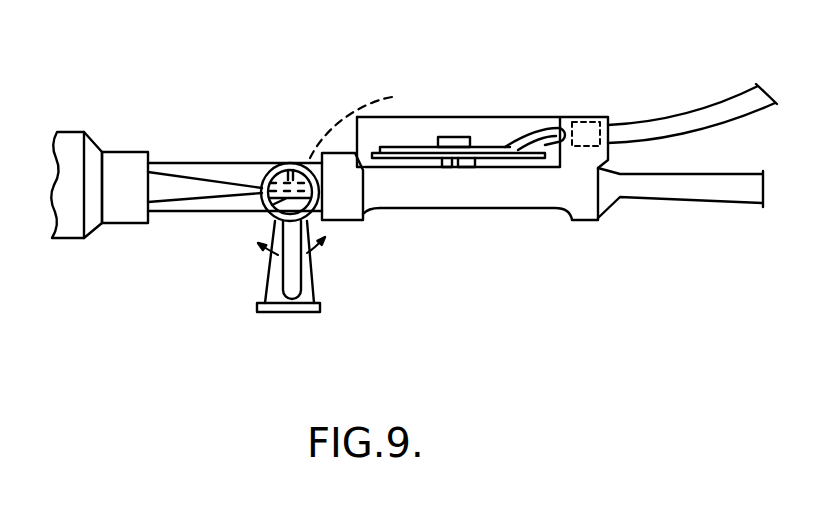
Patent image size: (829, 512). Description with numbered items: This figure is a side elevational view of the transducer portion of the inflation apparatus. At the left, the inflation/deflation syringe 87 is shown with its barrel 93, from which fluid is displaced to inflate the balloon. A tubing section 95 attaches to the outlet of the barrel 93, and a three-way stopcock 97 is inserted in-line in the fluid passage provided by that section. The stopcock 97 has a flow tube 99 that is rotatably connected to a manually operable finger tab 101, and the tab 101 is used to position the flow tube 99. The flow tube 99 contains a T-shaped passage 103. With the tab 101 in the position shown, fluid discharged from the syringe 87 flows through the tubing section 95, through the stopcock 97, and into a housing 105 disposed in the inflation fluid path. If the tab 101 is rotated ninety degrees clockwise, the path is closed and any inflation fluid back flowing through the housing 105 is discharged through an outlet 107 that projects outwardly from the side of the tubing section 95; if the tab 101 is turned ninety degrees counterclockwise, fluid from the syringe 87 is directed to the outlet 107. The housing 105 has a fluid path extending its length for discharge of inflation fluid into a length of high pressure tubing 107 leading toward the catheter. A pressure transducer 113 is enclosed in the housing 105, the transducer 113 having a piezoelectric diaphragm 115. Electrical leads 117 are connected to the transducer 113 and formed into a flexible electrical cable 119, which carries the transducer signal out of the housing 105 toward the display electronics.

The inflation/deflation syringe 87 is at (85, 169).
The barrel 93 is at (72, 240).
The tubing section 95 is at (215, 162).
The three-way stopcock 97 is at (252, 190).
The flow tube 99 is at (265, 212).
The finger tab 101 is at (307, 260).
The T-shaped passage 103 is at (352, 116).
The housing 105 is at (478, 255).
The outlet / high pressure tubing 107 is at (272, 313).
The pressure transducer 113 is at (510, 95).
The piezoelectric diaphragm 115 is at (453, 137).
The electrical leads 117 is at (412, 150).
The electrical cable 119 is at (708, 105).